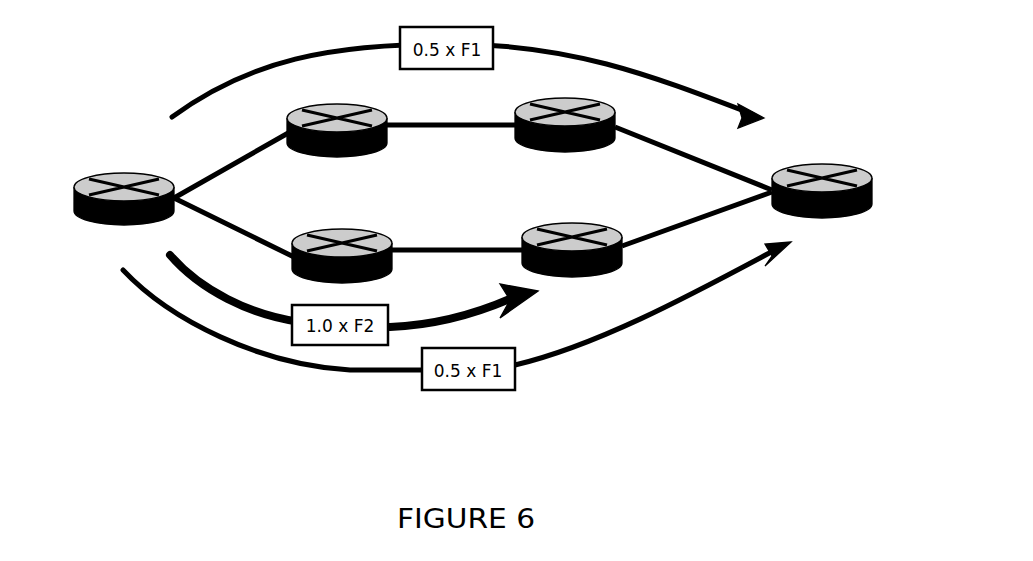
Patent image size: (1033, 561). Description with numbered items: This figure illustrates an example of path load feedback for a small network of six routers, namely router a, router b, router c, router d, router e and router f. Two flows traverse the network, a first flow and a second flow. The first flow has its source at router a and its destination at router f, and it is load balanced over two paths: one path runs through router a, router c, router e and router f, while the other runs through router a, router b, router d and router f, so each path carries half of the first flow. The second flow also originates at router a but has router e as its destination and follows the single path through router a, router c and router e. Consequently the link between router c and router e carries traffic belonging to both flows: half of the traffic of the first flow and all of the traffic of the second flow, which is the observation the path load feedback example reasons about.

The router a is at (112, 236).
The router b is at (350, 102).
The router c is at (350, 228).
The router d is at (568, 97).
The router e is at (580, 223).
The router f is at (838, 164).